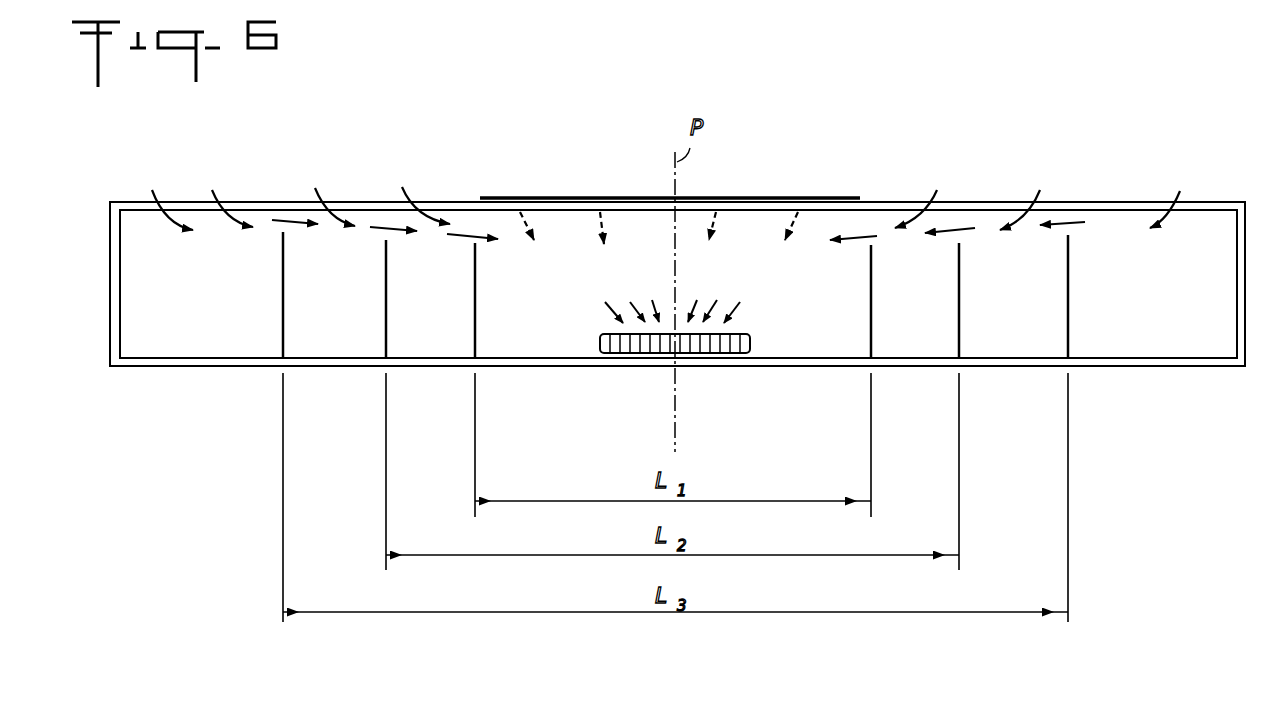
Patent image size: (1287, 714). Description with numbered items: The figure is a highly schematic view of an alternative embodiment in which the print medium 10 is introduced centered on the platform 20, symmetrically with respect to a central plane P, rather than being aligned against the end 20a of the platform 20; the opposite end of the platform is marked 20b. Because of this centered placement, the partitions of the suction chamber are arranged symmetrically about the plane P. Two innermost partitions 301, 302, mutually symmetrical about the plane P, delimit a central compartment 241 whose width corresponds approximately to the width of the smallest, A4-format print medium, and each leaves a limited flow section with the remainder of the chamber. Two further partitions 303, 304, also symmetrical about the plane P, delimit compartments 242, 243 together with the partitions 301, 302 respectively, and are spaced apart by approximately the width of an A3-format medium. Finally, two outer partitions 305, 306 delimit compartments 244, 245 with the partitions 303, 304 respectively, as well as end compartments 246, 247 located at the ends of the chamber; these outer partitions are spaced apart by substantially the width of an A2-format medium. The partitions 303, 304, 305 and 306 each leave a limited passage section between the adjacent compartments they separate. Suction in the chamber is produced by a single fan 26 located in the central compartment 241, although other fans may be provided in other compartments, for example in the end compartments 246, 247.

The print medium 10 is at (764, 198).
The platform 20 is at (245, 207).
The end of the platform 20a is at (1222, 200).
The left end wall of housing 20b is at (130, 202).
The fan 26 is at (732, 354).
The central compartment 241 is at (828, 343).
The compartment 242 is at (919, 343).
The compartment 243 is at (431, 338).
The compartment 244 is at (1014, 343).
The compartment 245 is at (338, 340).
The end compartment 246 is at (1146, 343).
The end compartment 247 is at (191, 336).
The partition 301 is at (871, 317).
The partition 302 is at (475, 316).
The partition 303 is at (959, 322).
The partition 304 is at (386, 316).
The partition 305 is at (1068, 325).
The partition 306 is at (283, 318).